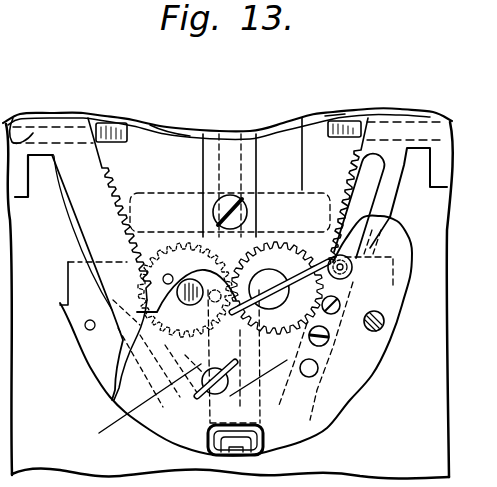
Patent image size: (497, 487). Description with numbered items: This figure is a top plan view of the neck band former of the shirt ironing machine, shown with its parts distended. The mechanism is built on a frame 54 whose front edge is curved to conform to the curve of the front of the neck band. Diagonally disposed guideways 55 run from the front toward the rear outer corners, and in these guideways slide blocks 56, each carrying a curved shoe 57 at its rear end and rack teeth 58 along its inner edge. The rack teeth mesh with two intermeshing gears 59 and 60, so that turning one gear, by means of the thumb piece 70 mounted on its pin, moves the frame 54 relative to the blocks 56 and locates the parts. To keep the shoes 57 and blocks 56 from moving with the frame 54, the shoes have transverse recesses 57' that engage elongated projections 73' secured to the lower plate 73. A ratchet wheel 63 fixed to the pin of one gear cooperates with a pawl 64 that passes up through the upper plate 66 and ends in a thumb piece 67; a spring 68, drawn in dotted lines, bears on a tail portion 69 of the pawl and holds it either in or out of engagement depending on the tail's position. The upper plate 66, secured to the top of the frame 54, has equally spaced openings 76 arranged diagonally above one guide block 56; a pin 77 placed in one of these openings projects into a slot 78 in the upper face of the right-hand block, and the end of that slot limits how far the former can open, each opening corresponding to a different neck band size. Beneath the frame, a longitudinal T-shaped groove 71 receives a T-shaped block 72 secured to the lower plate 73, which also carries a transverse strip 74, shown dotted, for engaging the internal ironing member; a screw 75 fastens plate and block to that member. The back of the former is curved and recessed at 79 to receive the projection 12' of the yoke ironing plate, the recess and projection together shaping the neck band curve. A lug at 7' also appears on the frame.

The frame lug 7' is at (16, 102).
The curved shoe 57 is at (227, 277).
The transverse recess 57' is at (411, 273).
The elongated projection 73' is at (241, 106).
The recess 79 is at (170, 130).
The projection of the yoke ironing plate 12' is at (222, 161).
The T-shaped block 72 is at (262, 160).
The transverse strip 74 is at (302, 125).
The lower plate 73 is at (337, 82).
The screw 75 is at (250, 198).
The gear 60 is at (270, 257).
The gear 59 is at (194, 248).
The ratchet wheel 63 is at (150, 250).
The pin 77 is at (352, 271).
The slot 78 is at (365, 202).
The rack teeth 58 is at (110, 197).
The sliding block 56 is at (103, 237).
The guideway 55 is at (107, 310).
The frame 54 is at (80, 345).
The upper plate 66 is at (370, 350).
The thumb piece 70 is at (341, 305).
The openings 76 is at (315, 371).
The spring 68 is at (258, 370).
The pawl 64 is at (120, 419).
The thumb piece 67 is at (150, 408).
The tail portion 69 is at (230, 396).
The T-shaped groove 71 is at (265, 428).